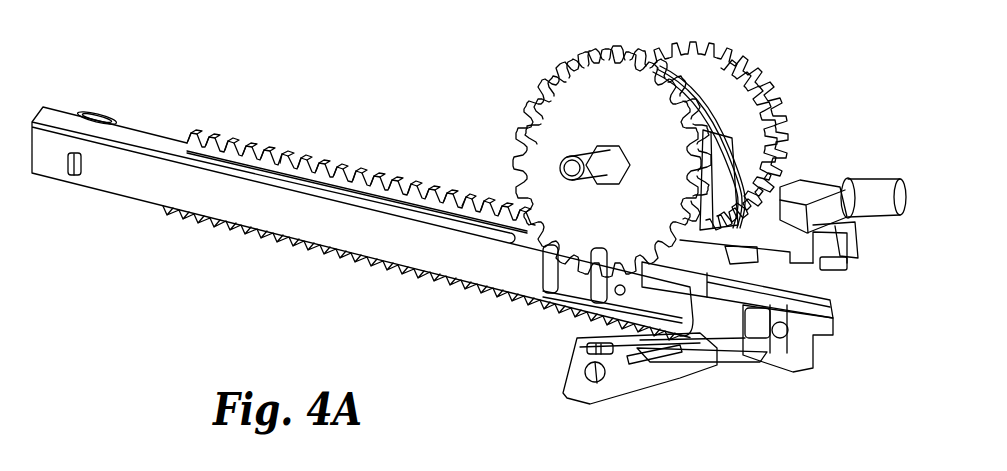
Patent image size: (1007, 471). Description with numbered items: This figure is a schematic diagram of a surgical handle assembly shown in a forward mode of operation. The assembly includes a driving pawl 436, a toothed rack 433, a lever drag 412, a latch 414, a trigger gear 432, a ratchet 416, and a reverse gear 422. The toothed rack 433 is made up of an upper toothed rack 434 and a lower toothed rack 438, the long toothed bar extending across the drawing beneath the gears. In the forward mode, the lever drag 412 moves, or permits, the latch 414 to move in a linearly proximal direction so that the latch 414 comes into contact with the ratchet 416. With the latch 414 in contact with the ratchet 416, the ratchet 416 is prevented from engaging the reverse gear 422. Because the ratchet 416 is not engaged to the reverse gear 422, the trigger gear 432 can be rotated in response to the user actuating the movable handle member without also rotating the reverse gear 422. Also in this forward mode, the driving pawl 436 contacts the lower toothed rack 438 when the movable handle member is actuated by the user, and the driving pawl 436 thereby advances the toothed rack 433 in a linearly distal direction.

The lever drag 412 is at (880, 202).
The latch 414 is at (715, 202).
The ratchet 416 is at (708, 117).
The reverse gear 422 is at (710, 63).
The trigger gear 432 is at (555, 118).
The toothed rack 433 is at (160, 177).
The upper toothed rack 434 is at (669, 250).
The driving pawl 436 is at (580, 390).
The lower toothed rack 438 is at (347, 255).